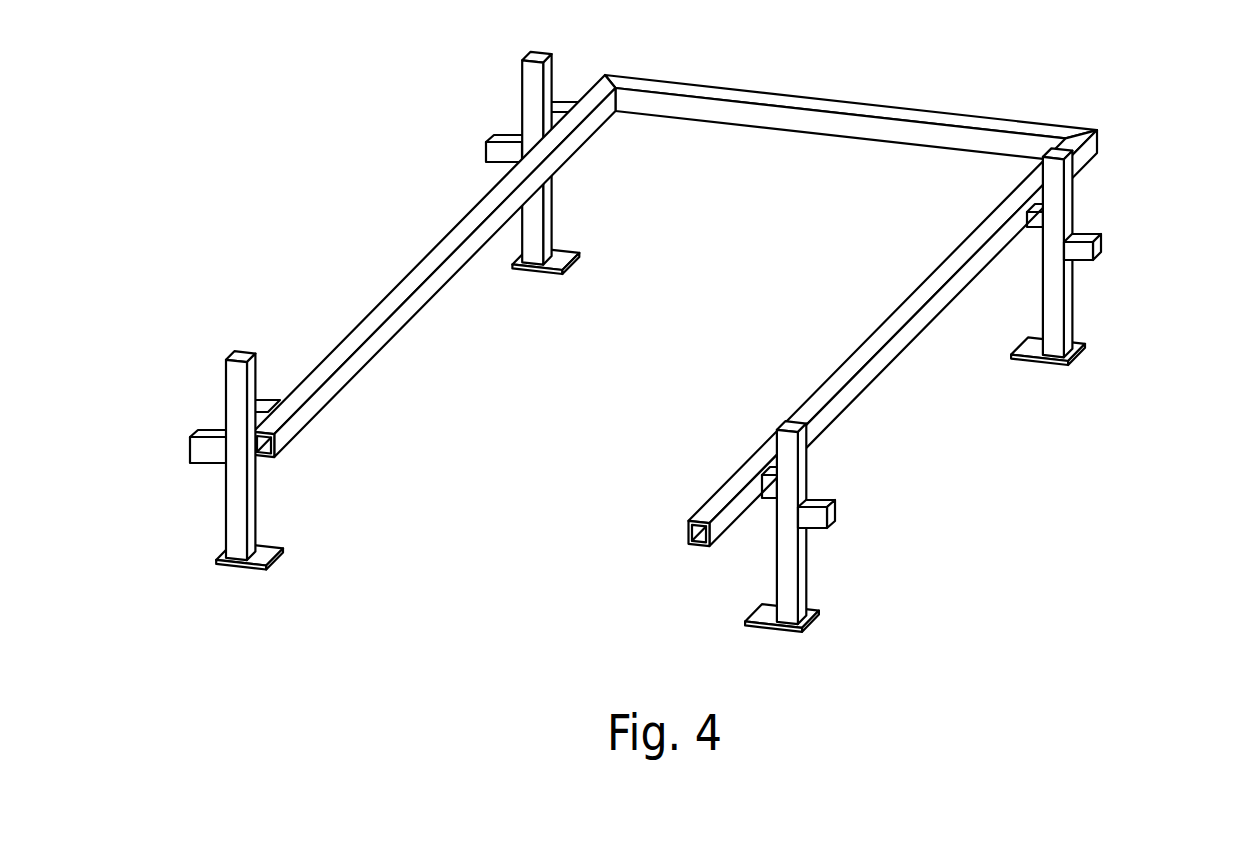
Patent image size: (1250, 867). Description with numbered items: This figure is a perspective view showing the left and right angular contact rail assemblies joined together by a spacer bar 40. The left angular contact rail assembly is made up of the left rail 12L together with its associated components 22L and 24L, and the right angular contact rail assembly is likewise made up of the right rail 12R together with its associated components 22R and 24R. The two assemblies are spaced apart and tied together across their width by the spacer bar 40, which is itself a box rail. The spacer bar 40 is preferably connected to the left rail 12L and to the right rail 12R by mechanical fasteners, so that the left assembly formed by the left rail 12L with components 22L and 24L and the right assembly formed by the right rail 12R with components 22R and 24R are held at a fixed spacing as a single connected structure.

The spacer bar 40 is at (895, 108).
The left rail 12L is at (422, 329).
The right rail 12R is at (816, 378).
The left angular contact rail assembly component 22L is at (196, 398).
The right angular contact rail assembly component 22R is at (824, 478).
The left angular contact rail assembly component 24L is at (487, 125).
The right angular contact rail assembly component 24R is at (1092, 217).